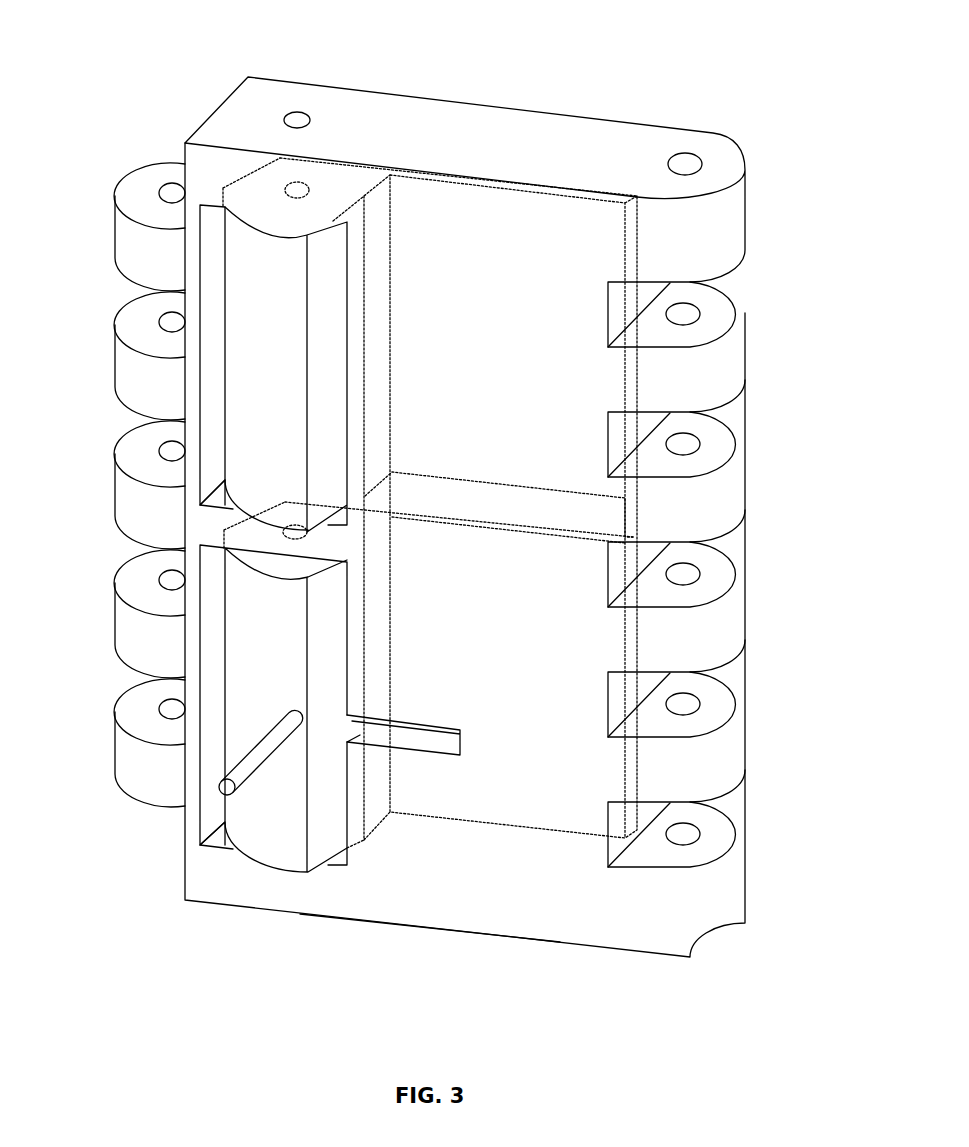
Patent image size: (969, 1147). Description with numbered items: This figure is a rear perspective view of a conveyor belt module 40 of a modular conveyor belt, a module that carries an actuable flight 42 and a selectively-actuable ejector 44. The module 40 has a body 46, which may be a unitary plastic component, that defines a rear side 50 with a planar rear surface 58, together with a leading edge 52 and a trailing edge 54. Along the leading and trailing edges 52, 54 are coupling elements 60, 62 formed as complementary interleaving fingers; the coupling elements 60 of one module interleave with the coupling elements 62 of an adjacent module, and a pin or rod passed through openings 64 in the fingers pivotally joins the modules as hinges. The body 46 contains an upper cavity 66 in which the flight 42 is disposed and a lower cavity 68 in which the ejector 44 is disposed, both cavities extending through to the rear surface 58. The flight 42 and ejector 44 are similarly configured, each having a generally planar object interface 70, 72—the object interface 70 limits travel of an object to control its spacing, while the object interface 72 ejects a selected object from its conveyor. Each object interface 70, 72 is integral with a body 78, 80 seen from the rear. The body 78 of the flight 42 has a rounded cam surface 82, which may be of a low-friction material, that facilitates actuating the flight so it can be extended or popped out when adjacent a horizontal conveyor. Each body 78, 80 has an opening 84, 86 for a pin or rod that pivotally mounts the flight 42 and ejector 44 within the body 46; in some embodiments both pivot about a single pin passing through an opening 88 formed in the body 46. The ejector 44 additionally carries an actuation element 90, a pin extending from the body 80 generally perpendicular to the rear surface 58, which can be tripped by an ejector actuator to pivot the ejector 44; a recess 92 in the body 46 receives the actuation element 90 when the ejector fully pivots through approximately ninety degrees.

The conveyor belt module 40 is at (90, 52).
The flight 42 is at (407, 450).
The ejector 44 is at (407, 835).
The body 46 is at (430, 113).
The rear side 50 is at (383, 960).
The leading edge 52 is at (103, 915).
The trailing edge 54 is at (818, 305).
The rear surface 58 is at (513, 932).
The coupling elements 60 is at (132, 372).
The coupling elements 62 is at (727, 367).
The openings 64 is at (690, 160).
The upper cavity 66 is at (217, 506).
The lower cavity 68 is at (213, 755).
The object interface 70 is at (512, 188).
The object interface 72 is at (510, 528).
The body 78 is at (333, 345).
The body 80 is at (330, 662).
The cam surface 82 is at (237, 272).
The opening 84 is at (303, 190).
The opening 86 is at (297, 523).
The opening 88 is at (300, 116).
The actuation element 90 is at (283, 727).
The recess 92 is at (437, 735).